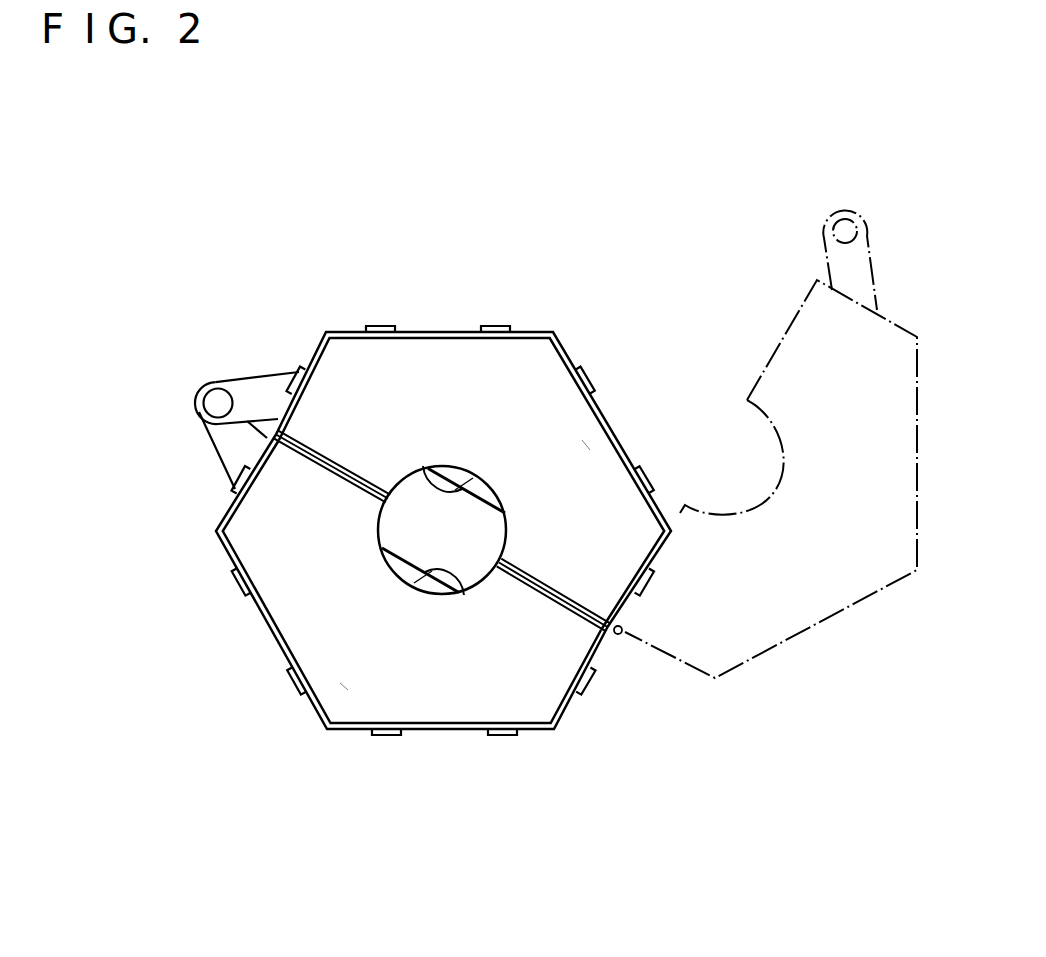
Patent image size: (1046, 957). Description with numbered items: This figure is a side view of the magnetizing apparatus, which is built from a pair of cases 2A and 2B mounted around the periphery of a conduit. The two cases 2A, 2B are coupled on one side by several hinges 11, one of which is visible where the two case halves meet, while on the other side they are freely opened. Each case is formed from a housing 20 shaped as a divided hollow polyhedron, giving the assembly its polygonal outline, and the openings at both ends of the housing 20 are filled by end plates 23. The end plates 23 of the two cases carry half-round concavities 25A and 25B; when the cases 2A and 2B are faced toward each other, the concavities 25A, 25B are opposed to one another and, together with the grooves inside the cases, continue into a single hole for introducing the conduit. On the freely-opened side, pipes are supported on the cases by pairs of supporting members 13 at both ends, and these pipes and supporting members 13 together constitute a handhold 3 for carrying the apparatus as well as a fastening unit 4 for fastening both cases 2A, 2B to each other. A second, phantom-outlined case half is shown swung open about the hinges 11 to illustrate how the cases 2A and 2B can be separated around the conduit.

The case 2A is at (280, 615).
The case 2B is at (555, 363).
The housing 20 is at (408, 330).
The end plate 23 is at (582, 445).
The half-round concavity 25A is at (464, 595).
The half-round concavity 25B is at (423, 466).
The hinge 11 is at (622, 635).
The handhold 3 is at (175, 370).
The fastening unit 4 is at (186, 391).
The supporting member 13 is at (262, 385).